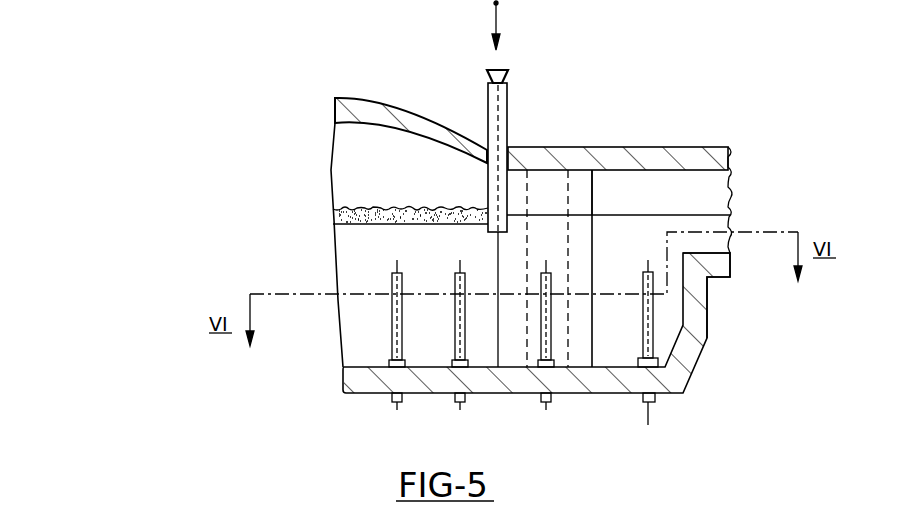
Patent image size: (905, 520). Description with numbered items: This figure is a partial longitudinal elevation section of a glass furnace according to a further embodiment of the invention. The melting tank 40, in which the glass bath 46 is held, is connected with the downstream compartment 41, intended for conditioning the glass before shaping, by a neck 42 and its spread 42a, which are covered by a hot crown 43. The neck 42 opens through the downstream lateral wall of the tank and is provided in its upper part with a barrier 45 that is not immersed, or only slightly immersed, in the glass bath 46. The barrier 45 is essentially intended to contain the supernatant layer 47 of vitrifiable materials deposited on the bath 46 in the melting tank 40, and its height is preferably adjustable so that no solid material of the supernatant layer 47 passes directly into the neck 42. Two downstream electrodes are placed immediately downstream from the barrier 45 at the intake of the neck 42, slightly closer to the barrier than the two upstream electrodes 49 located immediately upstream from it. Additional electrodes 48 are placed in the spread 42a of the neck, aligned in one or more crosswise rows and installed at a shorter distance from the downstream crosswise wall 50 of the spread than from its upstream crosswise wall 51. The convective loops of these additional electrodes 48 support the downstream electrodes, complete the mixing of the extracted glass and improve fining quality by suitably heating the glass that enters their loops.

The melting tank 40 is at (362, 46).
The downstream compartment 41 is at (727, 110).
The neck 42 is at (555, 241).
The spread 42a is at (640, 241).
The hot crown 43 is at (580, 157).
The barrier 45 is at (500, 135).
The glass bath 46 is at (358, 315).
The supernatant layer 47 is at (335, 213).
The additional electrodes 48 is at (643, 325).
The electrodes of melting zone 49 is at (391, 334).
The downstream crosswise wall 50 is at (694, 312).
The upstream crosswise wall 51 is at (592, 193).